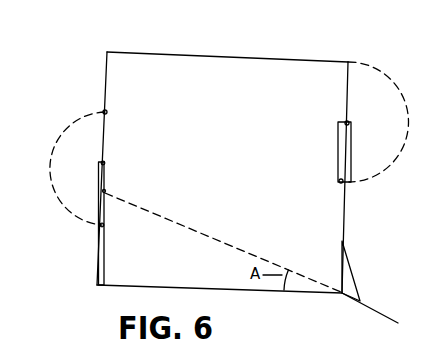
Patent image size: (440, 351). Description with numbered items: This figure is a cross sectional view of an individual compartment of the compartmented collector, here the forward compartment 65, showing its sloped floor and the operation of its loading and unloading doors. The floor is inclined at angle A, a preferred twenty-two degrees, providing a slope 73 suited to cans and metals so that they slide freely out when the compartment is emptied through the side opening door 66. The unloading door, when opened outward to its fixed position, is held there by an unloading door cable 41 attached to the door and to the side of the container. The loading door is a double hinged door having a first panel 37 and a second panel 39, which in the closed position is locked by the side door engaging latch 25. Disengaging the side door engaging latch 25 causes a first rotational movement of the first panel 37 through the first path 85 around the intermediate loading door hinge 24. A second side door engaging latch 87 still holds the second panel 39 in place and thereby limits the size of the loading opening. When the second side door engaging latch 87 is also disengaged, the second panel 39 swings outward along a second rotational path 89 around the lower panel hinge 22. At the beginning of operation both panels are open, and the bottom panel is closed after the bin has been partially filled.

The forward compartment 65 is at (221, 56).
The side door engaging latch 25 is at (108, 51).
The second side door engaging latch 87 is at (104, 111).
The second rotational path 89 is at (50, 192).
The first panel 37 is at (103, 238).
The second panel 39 is at (104, 191).
The slope 73 is at (236, 247).
The intermediate loading door hinge 24 is at (350, 123).
The lower panel hinge 22 is at (349, 182).
The first path 85 is at (402, 108).
The unloading door cable 41 is at (352, 273).
The side opening door 66 is at (385, 313).